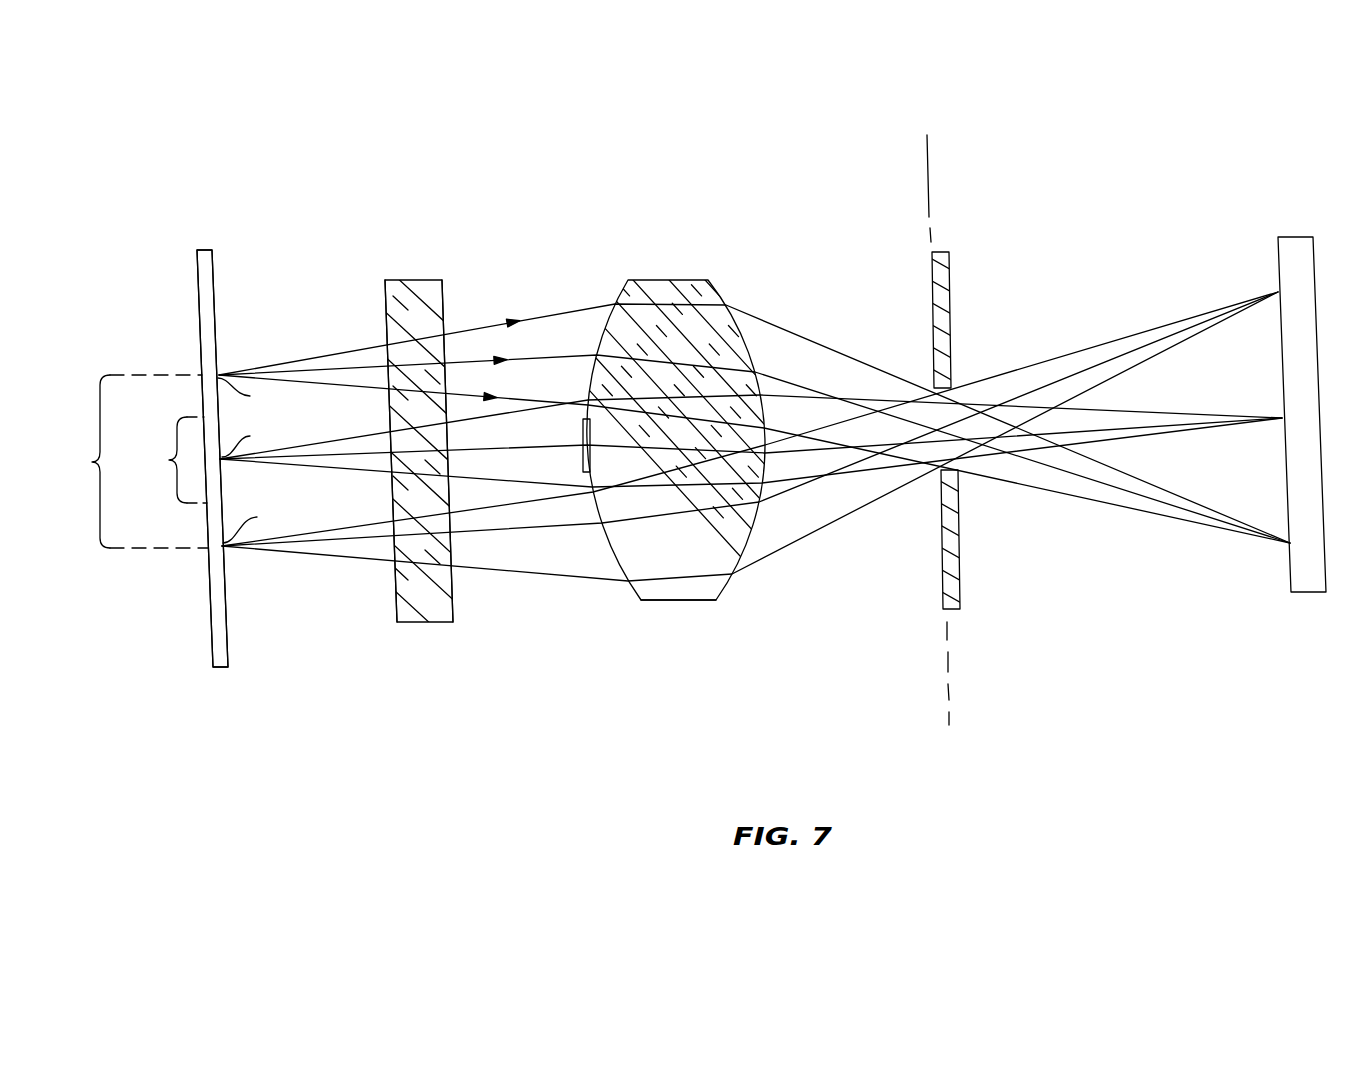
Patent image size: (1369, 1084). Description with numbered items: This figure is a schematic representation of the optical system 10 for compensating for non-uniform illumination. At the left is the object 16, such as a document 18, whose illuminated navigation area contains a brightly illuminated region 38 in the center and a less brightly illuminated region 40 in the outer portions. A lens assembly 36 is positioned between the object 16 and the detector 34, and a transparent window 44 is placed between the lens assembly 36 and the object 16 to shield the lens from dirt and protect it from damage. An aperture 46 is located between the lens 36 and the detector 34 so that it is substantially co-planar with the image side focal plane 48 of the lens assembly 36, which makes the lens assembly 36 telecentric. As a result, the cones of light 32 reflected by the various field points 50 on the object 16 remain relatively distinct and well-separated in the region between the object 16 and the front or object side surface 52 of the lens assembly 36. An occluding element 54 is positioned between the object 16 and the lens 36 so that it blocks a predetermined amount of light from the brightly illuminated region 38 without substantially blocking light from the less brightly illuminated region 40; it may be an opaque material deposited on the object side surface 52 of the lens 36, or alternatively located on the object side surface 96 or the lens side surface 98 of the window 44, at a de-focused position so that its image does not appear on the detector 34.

The optical system 10 is at (244, 117).
The object 16 is at (188, 294).
The document 18 is at (230, 645).
The cones of light 32 is at (362, 382).
The detector 34 is at (1296, 237).
The lens assembly 36 is at (668, 280).
The brightly illuminated region 38 is at (168, 460).
The less brightly illuminated region 40 is at (133, 461).
The transparent window 44 is at (413, 280).
The aperture 46 is at (943, 255).
The image side focal plane 48 is at (930, 165).
The field points 50 is at (245, 460).
The object side surface 52 is at (633, 600).
The occluding element 54 is at (582, 452).
The object side surface of window 96 is at (397, 605).
The lens side surface of window 98 is at (453, 600).